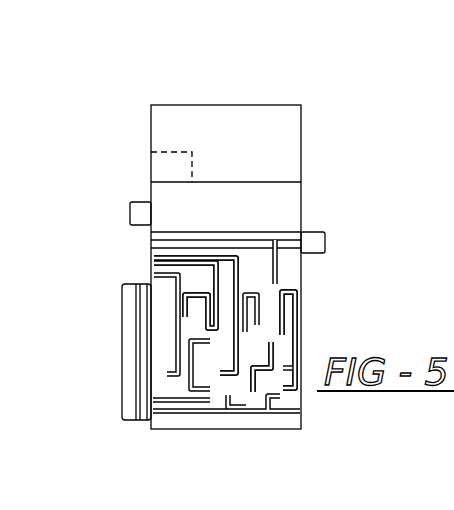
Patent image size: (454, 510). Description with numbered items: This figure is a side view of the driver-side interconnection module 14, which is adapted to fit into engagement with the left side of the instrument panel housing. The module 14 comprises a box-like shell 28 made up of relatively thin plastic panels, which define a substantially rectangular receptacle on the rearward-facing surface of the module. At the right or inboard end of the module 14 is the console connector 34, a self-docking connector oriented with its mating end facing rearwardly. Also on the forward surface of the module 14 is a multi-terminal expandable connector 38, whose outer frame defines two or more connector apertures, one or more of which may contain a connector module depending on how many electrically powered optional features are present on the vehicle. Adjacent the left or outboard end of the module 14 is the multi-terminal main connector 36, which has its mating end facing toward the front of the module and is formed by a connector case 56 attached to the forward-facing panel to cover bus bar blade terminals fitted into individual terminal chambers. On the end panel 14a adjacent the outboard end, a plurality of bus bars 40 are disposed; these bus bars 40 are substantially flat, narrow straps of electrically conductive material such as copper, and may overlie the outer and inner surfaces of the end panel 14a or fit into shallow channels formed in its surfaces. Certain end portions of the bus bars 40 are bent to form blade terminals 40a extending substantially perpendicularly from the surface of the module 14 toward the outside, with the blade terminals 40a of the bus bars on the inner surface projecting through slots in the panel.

The driver-side interconnection module 14 is at (101, 120).
The end panel 14a is at (282, 341).
The box-like shell 28 is at (300, 106).
The console connector 34 is at (325, 243).
The main connector 36 is at (123, 339).
The expandable connector 38 is at (135, 210).
The bus bars 40 is at (216, 277).
The blade terminals 40a is at (193, 290).
The connector case 56 is at (125, 395).